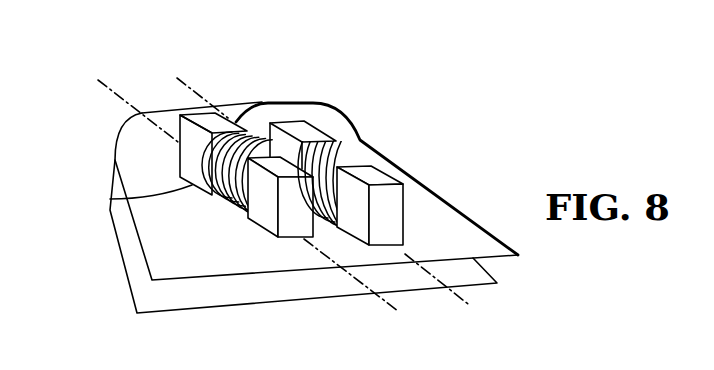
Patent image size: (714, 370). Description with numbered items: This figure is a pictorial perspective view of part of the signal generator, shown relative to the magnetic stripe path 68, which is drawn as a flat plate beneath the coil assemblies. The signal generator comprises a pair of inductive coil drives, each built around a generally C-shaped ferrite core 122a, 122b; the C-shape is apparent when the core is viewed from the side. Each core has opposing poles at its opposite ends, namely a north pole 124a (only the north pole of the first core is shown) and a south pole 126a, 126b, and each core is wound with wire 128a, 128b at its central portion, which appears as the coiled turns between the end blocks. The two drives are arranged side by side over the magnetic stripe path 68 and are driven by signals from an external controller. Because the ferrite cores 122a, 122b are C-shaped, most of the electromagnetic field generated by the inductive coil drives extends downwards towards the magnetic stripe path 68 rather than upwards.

The magnetic stripe path 68 is at (160, 83).
The ferrite core 122a is at (232, 123).
The ferrite core 122b is at (380, 173).
The north pole 124a is at (110, 199).
The south pole 126a is at (288, 238).
The south pole 126b is at (382, 245).
The wire 128a is at (236, 122).
The wire 128b is at (338, 143).